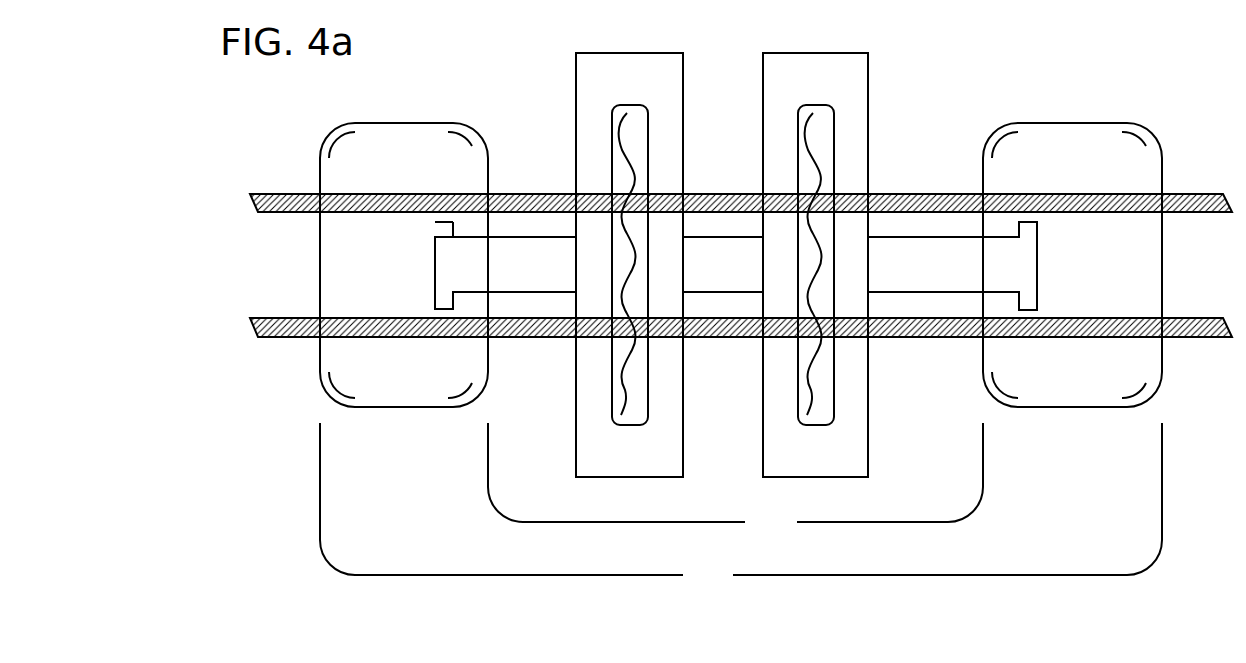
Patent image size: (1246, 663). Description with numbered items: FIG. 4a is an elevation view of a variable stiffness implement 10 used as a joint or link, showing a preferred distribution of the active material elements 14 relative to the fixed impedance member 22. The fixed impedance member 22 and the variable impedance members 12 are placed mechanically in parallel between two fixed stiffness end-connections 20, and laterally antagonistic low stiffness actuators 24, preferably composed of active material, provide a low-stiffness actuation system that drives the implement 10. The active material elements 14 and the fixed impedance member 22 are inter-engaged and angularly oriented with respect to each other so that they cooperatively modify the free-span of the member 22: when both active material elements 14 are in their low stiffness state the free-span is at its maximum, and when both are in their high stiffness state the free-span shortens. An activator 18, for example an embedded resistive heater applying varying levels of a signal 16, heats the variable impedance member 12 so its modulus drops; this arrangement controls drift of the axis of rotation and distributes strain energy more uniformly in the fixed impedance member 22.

The variable stiffness implement 10 is at (729, 589).
The variable impedance member 12 is at (791, 536).
The active material element 14 is at (868, 141).
The signal 16 is at (637, 377).
The activator 18 is at (612, 155).
The fixed stiffness end-connection 20 is at (404, 192).
The fixed impedance member 22 is at (954, 279).
The low stiffness actuator 24 is at (1195, 213).